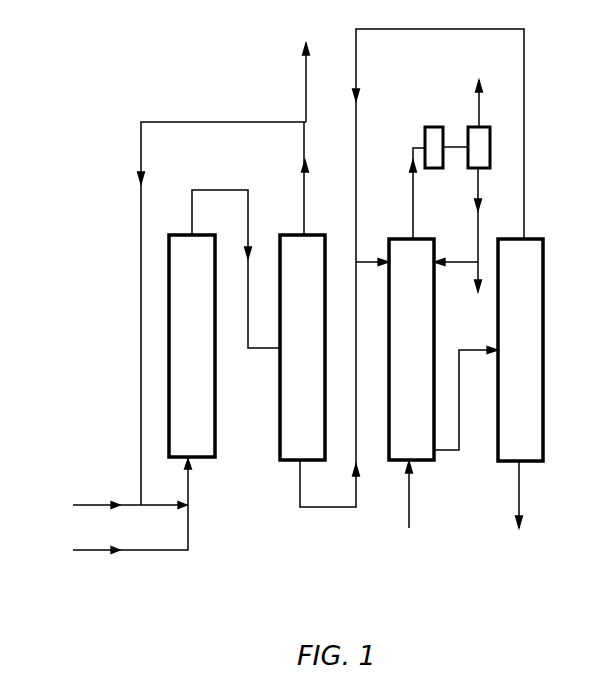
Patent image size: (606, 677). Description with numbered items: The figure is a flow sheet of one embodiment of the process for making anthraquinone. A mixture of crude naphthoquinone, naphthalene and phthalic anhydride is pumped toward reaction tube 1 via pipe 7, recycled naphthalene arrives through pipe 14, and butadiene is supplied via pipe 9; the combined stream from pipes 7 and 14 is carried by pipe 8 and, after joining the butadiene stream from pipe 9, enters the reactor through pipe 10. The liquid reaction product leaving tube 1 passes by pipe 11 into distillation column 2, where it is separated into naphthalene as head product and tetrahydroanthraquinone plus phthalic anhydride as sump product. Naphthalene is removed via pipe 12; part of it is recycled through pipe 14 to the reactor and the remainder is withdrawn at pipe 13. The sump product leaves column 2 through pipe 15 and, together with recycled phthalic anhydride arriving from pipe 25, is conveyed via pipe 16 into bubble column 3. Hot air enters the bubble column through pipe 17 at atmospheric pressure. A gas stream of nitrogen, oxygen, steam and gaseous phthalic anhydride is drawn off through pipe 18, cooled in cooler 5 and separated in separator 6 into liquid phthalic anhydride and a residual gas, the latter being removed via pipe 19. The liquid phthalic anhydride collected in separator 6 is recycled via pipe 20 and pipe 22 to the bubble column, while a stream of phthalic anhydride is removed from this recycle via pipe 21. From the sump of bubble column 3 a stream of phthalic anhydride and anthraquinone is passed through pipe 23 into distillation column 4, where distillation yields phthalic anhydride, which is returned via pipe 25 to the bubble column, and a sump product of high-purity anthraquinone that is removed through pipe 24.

The reaction tube 1 is at (192, 346).
The distillation column 2 is at (302, 347).
The bubble column 3 is at (411, 349).
The distillation column 4 is at (520, 350).
The cooler 5 is at (432, 132).
The separator 6 is at (475, 134).
The pipe 7 is at (91, 505).
The pipe 8 is at (168, 504).
The pipe 9 is at (97, 550).
The pipe 10 is at (189, 490).
The transfer line from first column to second column 11 is at (247, 215).
The pipe 12 is at (304, 183).
The pipe 13 is at (310, 71).
The pipe 14 is at (140, 215).
The bottoms line from second column 15 is at (299, 492).
The pipe 16 is at (370, 259).
The pipe 17 is at (412, 510).
The pipe 18 is at (412, 183).
The pipe 19 is at (482, 91).
The pipe 20 is at (477, 188).
The pipe 21 is at (477, 292).
The pipe 22 is at (458, 260).
The pipe 23 is at (456, 451).
The pipe 24 is at (517, 510).
The pipe 25 is at (358, 68).